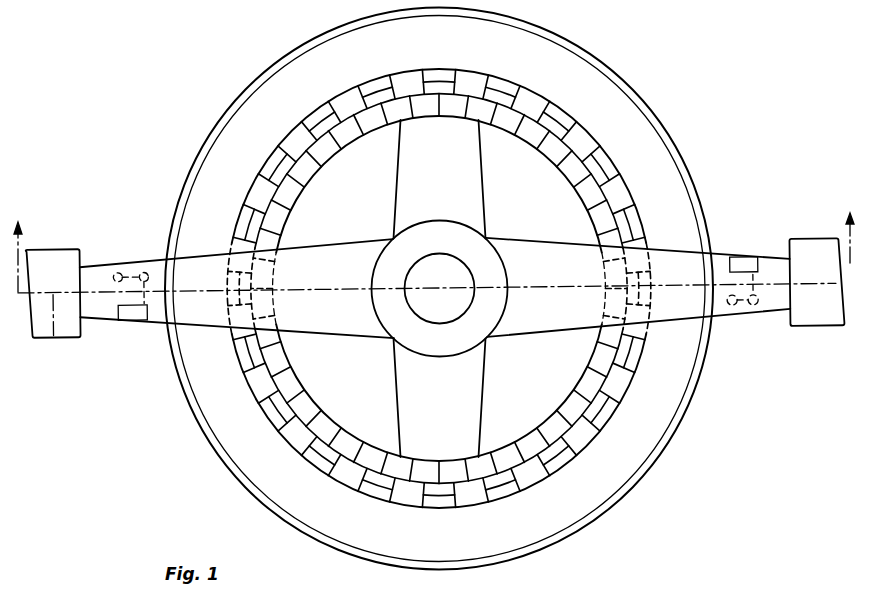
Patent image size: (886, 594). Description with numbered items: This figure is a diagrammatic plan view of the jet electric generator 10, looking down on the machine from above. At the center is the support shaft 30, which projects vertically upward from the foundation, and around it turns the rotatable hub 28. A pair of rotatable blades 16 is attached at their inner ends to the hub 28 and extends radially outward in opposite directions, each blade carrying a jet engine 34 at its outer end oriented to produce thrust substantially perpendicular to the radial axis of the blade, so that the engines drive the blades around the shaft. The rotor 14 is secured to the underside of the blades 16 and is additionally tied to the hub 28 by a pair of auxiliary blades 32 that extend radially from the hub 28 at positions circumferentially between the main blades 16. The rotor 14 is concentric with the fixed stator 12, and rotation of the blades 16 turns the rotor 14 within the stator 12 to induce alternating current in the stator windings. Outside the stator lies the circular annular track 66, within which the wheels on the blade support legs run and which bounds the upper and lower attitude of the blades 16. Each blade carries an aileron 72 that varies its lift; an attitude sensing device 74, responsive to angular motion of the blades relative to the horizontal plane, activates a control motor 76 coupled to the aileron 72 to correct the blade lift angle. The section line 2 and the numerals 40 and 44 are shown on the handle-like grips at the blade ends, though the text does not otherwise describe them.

The jet electric generator 10 is at (236, 83).
The stator 12 is at (317, 113).
The rotor 14 is at (355, 137).
The rotatable blades 16 is at (550, 248).
The rotatable hub 28 is at (477, 243).
The support shaft 30 is at (425, 270).
The auxiliary blades 32 is at (479, 403).
The jet engines 34 is at (826, 320).
The left handle grip 40 is at (53, 306).
The grip axis 44 is at (48, 314).
The annular track 66 is at (663, 123).
The aileron 72 is at (133, 319).
The attitude sensing device 74 is at (117, 269).
The control motor 76 is at (145, 269).
The section line 2 is at (434, 243).